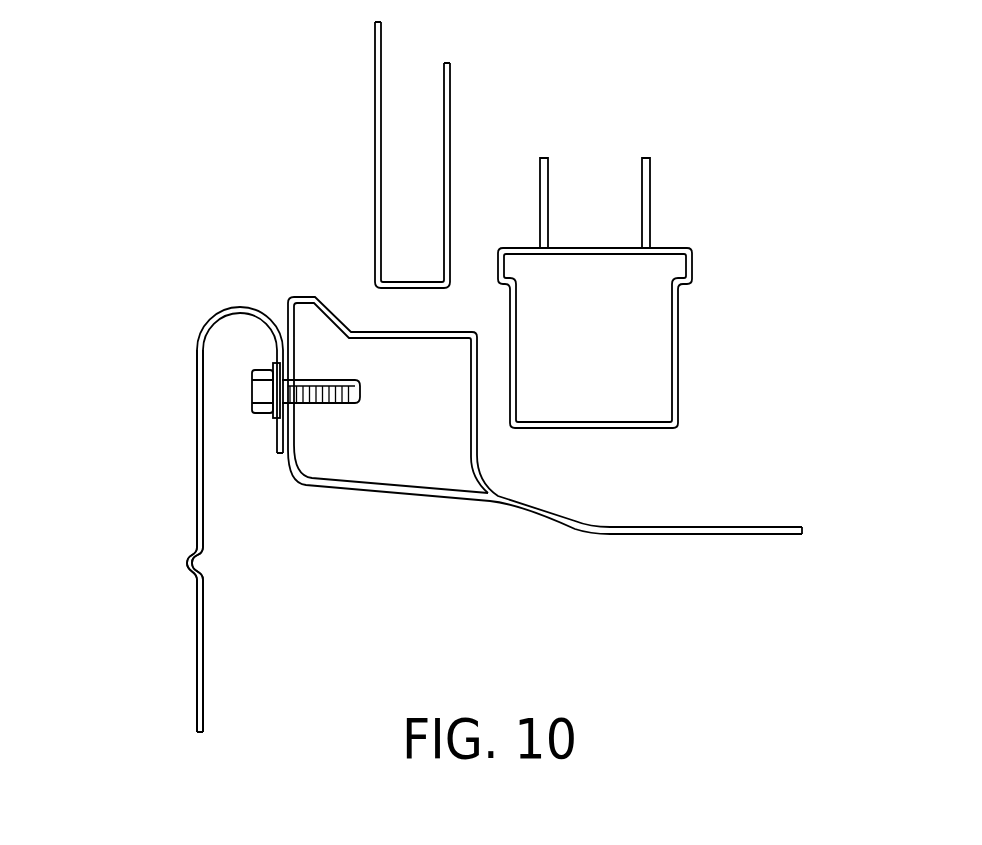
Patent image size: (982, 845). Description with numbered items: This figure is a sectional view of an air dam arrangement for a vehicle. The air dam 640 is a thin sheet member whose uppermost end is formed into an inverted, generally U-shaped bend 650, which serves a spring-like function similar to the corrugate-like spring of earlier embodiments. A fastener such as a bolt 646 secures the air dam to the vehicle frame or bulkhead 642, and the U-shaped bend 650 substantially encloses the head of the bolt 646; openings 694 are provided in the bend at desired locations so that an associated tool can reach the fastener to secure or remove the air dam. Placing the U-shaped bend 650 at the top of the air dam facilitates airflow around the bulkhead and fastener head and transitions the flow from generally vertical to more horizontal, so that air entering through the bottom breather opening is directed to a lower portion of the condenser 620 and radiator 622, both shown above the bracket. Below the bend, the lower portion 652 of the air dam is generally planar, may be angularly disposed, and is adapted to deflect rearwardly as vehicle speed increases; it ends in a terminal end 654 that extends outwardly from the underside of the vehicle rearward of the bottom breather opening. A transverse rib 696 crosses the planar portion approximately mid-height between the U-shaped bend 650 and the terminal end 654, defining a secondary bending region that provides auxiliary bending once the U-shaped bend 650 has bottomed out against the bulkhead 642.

The condenser 620 is at (543, 197).
The radiator 622 is at (377, 153).
The air dam 640 is at (173, 678).
The bulkhead 642 is at (398, 472).
The bolt 646 is at (260, 413).
The U-shaped bend 650 is at (206, 305).
The lower portion 652 is at (202, 653).
The terminal end 654 is at (198, 733).
The openings 694 is at (198, 422).
The transverse rib 696 is at (190, 553).